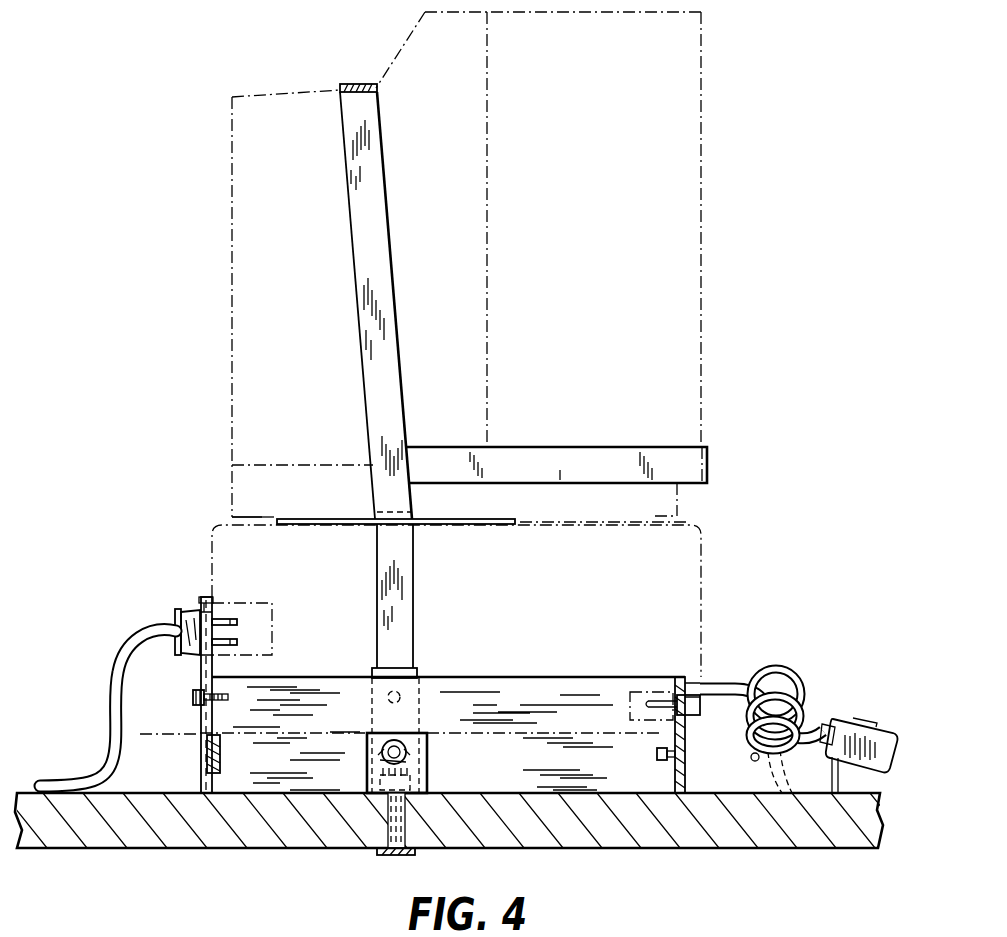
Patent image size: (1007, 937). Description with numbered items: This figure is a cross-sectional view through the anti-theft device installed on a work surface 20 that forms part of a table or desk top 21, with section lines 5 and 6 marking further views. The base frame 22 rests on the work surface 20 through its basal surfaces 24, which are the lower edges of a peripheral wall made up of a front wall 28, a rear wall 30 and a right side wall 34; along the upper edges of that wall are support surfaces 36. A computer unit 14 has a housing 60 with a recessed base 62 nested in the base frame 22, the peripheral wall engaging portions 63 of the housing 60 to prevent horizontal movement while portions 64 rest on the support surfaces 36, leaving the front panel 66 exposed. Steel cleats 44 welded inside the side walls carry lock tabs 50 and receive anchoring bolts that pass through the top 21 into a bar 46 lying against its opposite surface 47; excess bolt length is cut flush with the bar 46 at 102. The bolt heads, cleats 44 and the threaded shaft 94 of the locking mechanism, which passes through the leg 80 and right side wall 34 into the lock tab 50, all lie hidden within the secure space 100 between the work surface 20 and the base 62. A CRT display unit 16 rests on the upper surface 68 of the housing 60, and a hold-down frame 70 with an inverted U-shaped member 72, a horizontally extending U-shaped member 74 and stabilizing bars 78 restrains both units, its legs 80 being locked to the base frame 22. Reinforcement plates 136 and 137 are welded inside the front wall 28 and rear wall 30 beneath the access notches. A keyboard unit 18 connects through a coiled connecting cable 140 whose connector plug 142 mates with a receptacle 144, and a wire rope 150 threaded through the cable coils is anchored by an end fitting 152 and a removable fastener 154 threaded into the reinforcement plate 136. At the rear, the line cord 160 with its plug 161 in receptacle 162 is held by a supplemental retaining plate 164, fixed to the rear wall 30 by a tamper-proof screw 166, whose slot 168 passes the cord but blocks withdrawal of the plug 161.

The computer unit 14 is at (705, 553).
The CRT display unit 16 is at (703, 283).
The keyboard unit 18 is at (843, 712).
The work surface 20 is at (468, 793).
The table or desk top 21 is at (605, 848).
The base frame 22 is at (203, 787).
The basal surfaces 24 is at (285, 795).
The front wall 28 is at (688, 770).
The rear wall 30 is at (206, 770).
The right side wall 34 is at (511, 686).
The support surfaces 36 is at (314, 677).
The cleats 44 is at (433, 785).
The bar 46 is at (413, 852).
The opposite surface 47 is at (595, 848).
The lock tab 50 is at (428, 752).
The housing 60 is at (544, 552).
The base 62 is at (331, 723).
The portions of housing 63 is at (154, 736).
The portions of housing 64 is at (695, 681).
The front panel 66 is at (705, 578).
The upper surface 68 is at (593, 520).
The hold-down frame 70 is at (397, 272).
The inverted U-shaped member 72 is at (362, 84).
The horizontally-extending U-shaped member 74 is at (705, 466).
The stabilizing bars 78 is at (450, 518).
The legs 80 is at (413, 585).
The threaded shaft 94 is at (398, 744).
The secure space 100 is at (347, 793).
The flush cut location 102 is at (392, 858).
The reinforcement plate 136 is at (668, 793).
The reinforcement plate 137 is at (222, 763).
The coiled connecting cable 140 is at (796, 682).
The connector plug 142 is at (695, 713).
The receptacle 144 is at (626, 708).
The wire rope 150 is at (743, 682).
The end fitting 152 is at (673, 768).
The removable fastener 154 is at (656, 754).
The line cord 160 is at (109, 695).
The plug 161 is at (192, 648).
The receptacle 162 is at (277, 647).
The supplemental retaining plate 164 is at (200, 604).
The tamper-proof screw 166 is at (194, 702).
The slot 168 is at (213, 617).
The section line 5 is at (820, 782).
The section line 6 is at (170, 748).